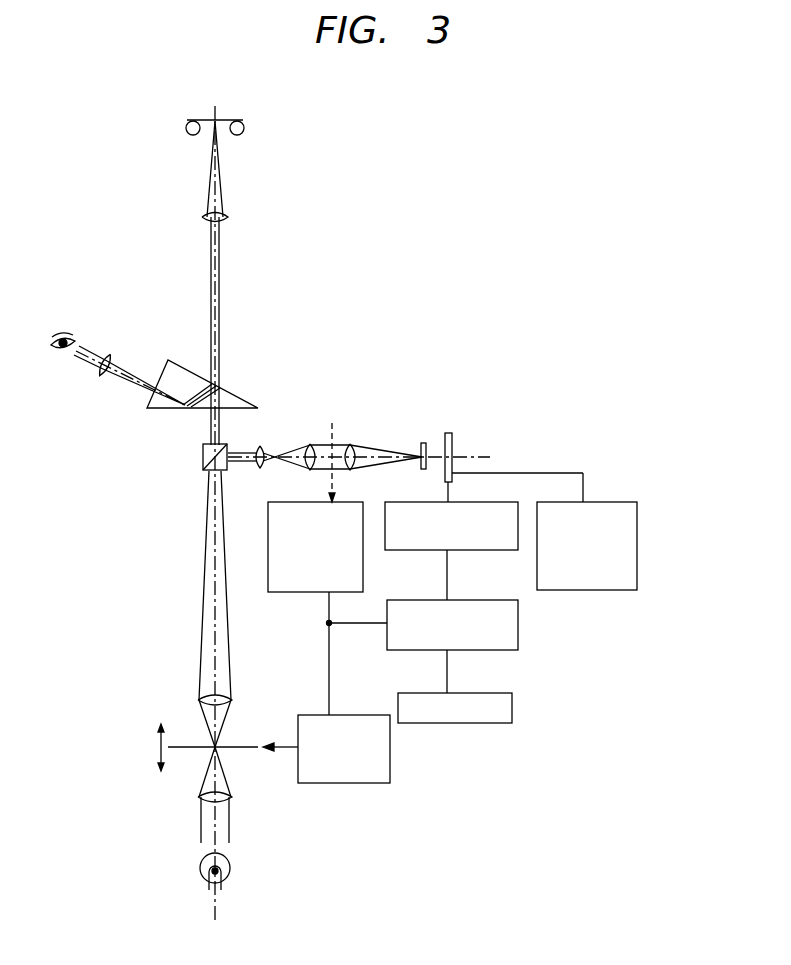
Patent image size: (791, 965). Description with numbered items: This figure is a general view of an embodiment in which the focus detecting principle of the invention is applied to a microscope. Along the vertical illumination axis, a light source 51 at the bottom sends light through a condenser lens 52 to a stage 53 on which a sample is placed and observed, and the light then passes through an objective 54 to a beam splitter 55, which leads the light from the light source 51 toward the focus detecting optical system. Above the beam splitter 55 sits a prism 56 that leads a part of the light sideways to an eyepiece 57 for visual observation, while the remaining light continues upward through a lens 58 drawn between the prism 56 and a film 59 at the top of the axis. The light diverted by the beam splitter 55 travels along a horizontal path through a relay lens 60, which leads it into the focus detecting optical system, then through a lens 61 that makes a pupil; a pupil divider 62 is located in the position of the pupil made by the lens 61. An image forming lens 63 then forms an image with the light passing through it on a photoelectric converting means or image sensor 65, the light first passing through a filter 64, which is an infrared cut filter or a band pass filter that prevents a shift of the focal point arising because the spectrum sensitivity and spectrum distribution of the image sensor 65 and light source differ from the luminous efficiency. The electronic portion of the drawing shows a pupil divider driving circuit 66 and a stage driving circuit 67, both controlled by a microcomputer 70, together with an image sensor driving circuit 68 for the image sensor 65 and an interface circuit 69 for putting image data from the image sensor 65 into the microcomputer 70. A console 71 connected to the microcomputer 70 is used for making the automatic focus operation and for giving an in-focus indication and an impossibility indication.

The light source 51 is at (229, 862).
The condenser lens 52 is at (232, 798).
The stage 53 is at (180, 748).
The objective 54 is at (205, 697).
The beam splitter 55 is at (203, 456).
The prism 56 is at (234, 394).
The eyepiece 57 is at (99, 376).
The imaging lens 58 is at (203, 217).
The film 59 is at (206, 119).
The relay lens 60 is at (261, 446).
The lens for making a pupil 61 is at (310, 445).
The pupil divider 62 is at (338, 449).
The image forming lens 63 is at (352, 445).
The filter 64 is at (424, 443).
The image sensor 65 is at (453, 441).
The pupil divider driving circuit 66 is at (268, 560).
The stage driving circuit 67 is at (308, 715).
The image sensor driving circuit 68 is at (584, 502).
The interface circuit 69 is at (470, 550).
The microcomputer 70 is at (425, 600).
The console 71 is at (432, 723).